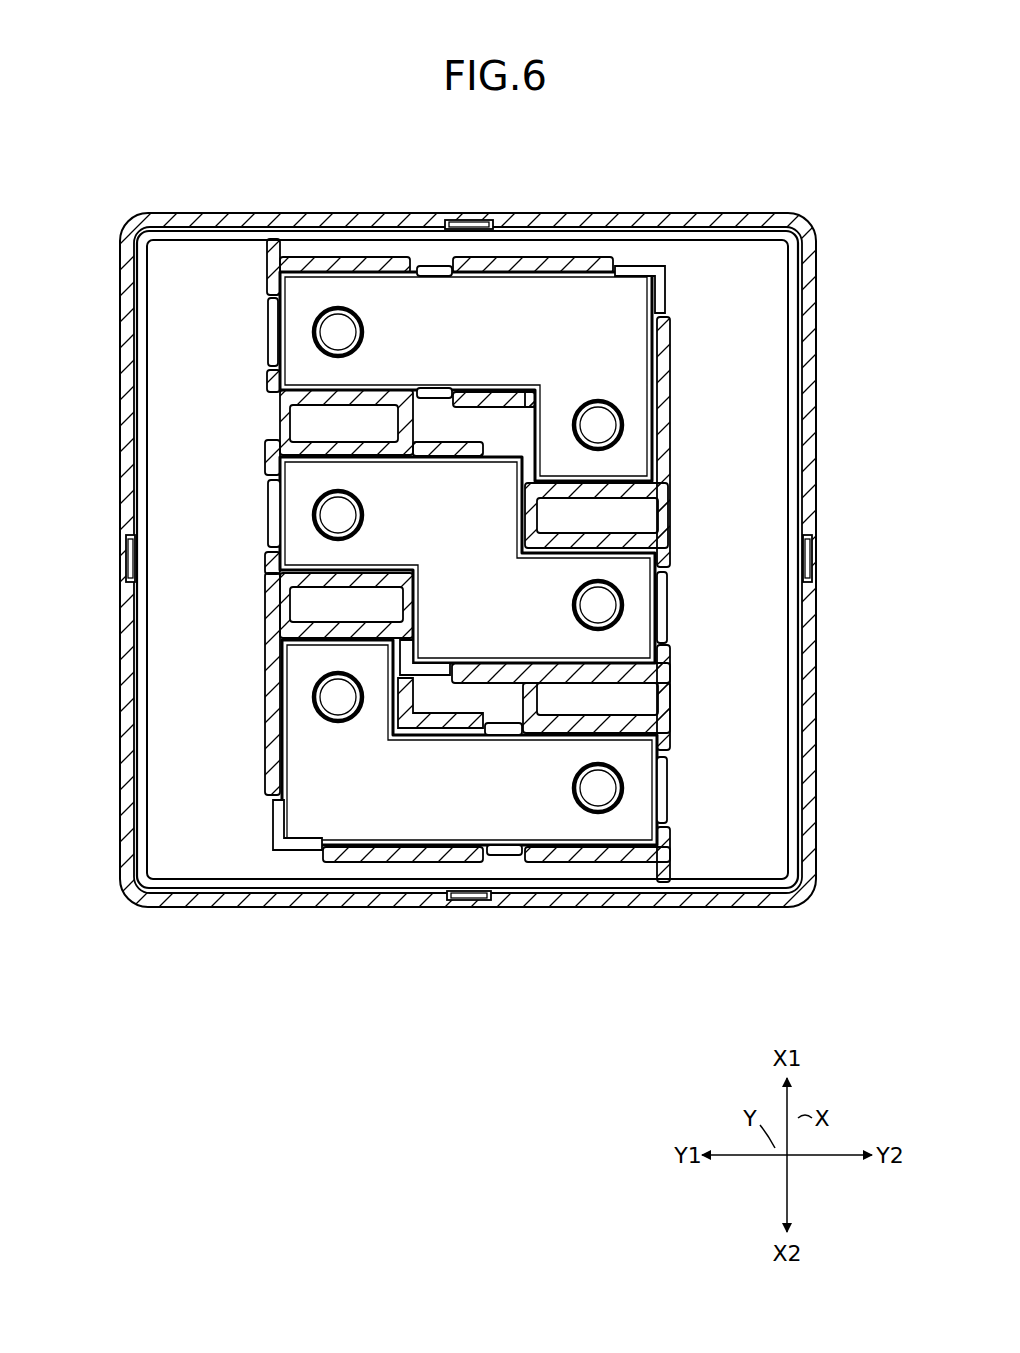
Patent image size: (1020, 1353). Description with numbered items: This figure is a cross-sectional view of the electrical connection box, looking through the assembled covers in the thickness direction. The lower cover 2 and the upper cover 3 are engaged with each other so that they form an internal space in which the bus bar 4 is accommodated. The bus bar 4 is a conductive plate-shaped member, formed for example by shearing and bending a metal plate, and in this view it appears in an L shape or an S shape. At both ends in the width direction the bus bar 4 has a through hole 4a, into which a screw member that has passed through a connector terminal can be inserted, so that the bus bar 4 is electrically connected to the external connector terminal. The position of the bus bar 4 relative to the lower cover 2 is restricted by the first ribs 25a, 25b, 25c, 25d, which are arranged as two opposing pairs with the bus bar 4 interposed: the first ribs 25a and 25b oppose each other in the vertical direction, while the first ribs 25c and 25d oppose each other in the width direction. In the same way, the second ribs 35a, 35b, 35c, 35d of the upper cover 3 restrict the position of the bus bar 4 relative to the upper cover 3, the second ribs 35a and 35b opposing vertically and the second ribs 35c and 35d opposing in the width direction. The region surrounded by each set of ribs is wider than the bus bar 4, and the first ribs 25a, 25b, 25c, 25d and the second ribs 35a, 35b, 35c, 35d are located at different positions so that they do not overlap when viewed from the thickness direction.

The lower cover 2 is at (790, 415).
The upper cover 3 is at (815, 325).
The bus bar 4 is at (297, 488).
The through hole 4a is at (338, 328).
The first rib 25a is at (435, 268).
The first rib 25b is at (430, 392).
The first rib 25c is at (275, 333).
The first rib 25d is at (658, 298).
The second rib 35a is at (365, 262).
The second rib 35b is at (503, 440).
The second rib 35c is at (278, 292).
The second rib 35d is at (663, 326).